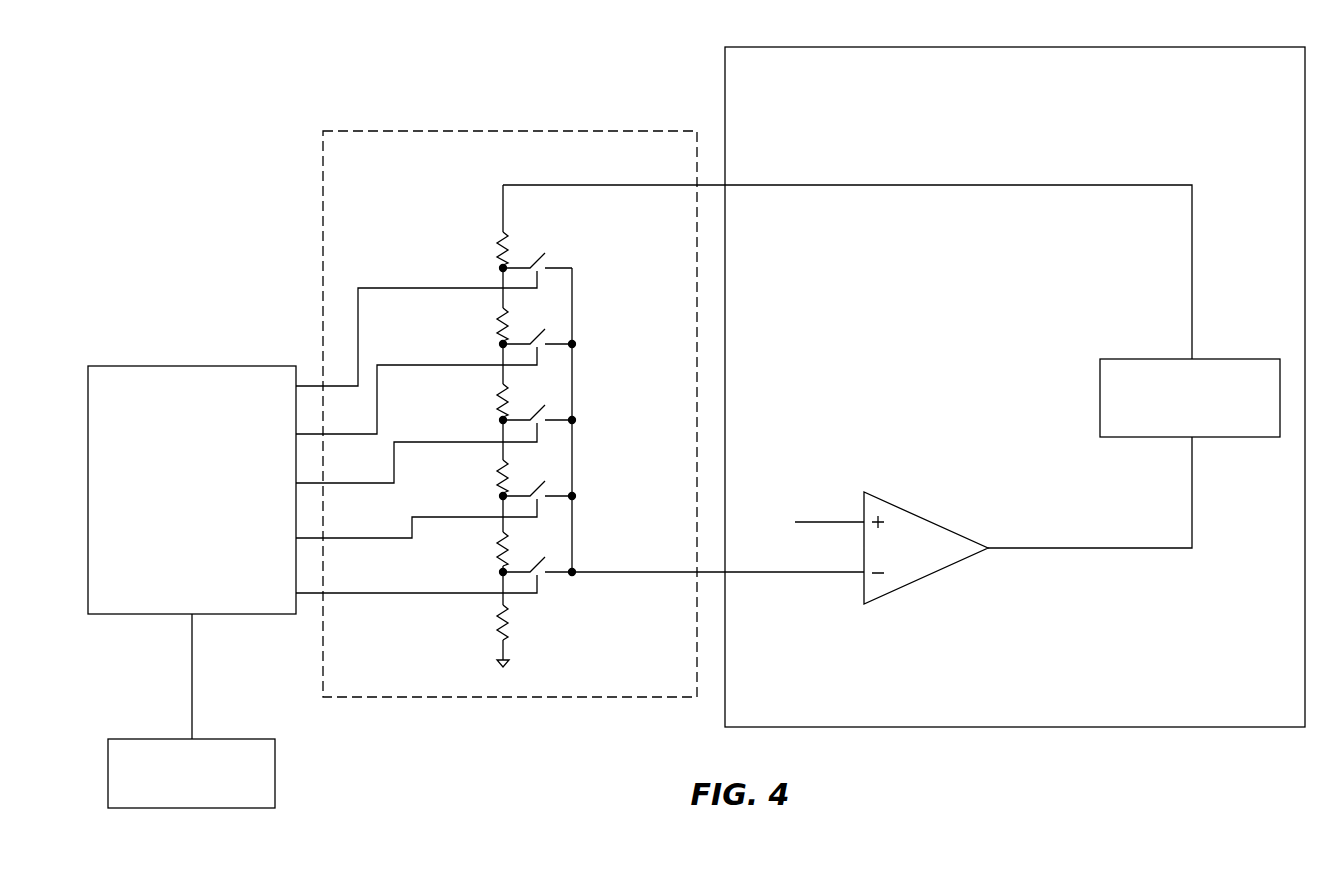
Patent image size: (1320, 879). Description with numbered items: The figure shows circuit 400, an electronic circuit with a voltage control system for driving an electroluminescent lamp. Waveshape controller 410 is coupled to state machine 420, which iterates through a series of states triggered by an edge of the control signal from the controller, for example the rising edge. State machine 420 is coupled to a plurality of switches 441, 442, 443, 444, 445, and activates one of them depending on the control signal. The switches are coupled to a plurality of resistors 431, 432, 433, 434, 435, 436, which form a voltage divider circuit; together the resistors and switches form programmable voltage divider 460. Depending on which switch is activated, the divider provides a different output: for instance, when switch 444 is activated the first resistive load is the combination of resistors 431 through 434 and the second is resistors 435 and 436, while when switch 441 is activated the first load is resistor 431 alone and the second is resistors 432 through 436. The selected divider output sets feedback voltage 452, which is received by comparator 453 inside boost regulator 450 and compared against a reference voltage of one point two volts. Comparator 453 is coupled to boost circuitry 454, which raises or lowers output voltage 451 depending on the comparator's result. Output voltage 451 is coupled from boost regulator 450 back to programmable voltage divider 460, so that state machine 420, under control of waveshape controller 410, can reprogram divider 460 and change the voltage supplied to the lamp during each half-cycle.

The circuit 400 is at (200, 89).
The waveshape controller 410 is at (275, 762).
The state machine 420 is at (173, 514).
The resistor 431 is at (493, 236).
The resistor 432 is at (493, 313).
The resistor 433 is at (493, 389).
The resistor 434 is at (493, 465).
The resistor 435 is at (493, 546).
The resistor 436 is at (493, 618).
The switch 441 is at (547, 248).
The switch 442 is at (547, 324).
The switch 443 is at (547, 400).
The switch 444 is at (547, 476).
The switch 445 is at (547, 578).
The boost regulator 450 is at (1008, 126).
The output voltage 451 is at (837, 185).
The feedback voltage 452 is at (782, 573).
The comparator 453 is at (928, 520).
The boost circuitry 454 is at (1225, 437).
The programmable voltage divider 460 is at (560, 131).